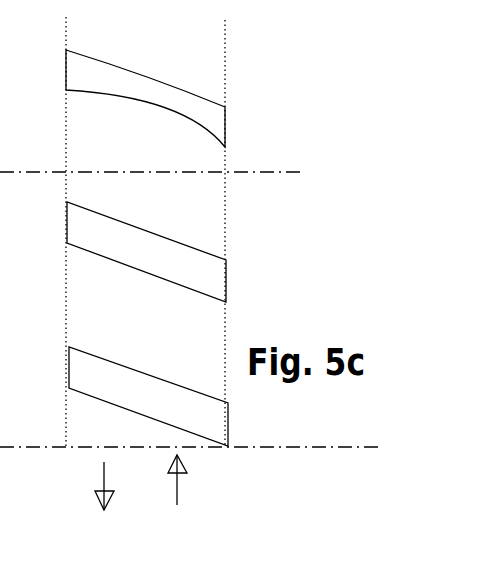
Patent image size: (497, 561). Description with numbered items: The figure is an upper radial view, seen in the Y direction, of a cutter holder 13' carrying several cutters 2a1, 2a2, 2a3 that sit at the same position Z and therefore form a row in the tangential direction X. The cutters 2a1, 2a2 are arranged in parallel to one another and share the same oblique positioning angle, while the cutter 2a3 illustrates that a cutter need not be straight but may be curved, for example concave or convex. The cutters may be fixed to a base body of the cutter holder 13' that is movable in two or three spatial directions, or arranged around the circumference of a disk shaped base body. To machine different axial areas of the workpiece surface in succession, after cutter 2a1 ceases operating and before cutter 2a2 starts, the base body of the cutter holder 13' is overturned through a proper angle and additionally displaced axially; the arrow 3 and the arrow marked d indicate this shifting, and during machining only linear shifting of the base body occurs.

The cutter 2a1 is at (148, 396).
The cutter 2a2 is at (146, 252).
The cutter 2a3 is at (145, 98).
The cutter holder 13' is at (267, 233).
The direction of movement 3 is at (104, 475).
The displacement distance d is at (177, 494).